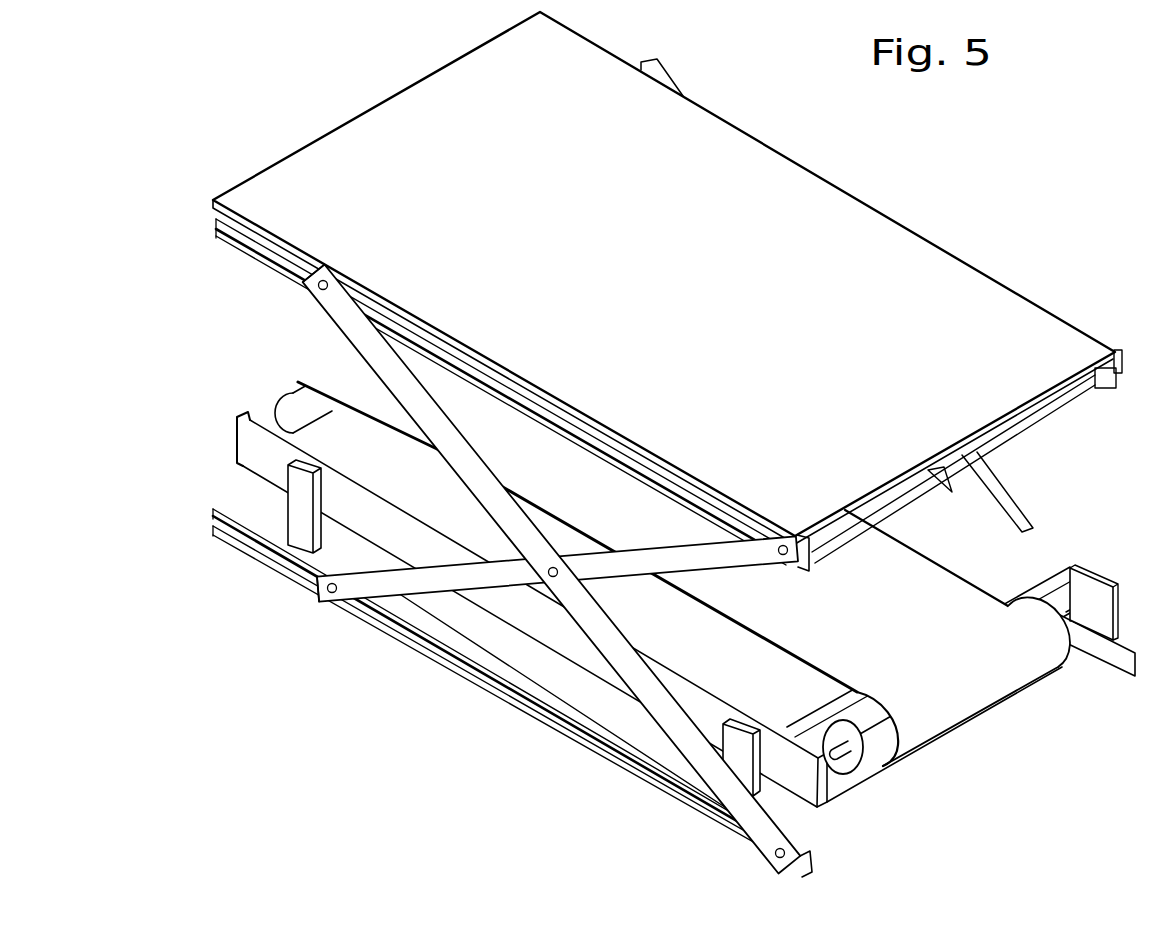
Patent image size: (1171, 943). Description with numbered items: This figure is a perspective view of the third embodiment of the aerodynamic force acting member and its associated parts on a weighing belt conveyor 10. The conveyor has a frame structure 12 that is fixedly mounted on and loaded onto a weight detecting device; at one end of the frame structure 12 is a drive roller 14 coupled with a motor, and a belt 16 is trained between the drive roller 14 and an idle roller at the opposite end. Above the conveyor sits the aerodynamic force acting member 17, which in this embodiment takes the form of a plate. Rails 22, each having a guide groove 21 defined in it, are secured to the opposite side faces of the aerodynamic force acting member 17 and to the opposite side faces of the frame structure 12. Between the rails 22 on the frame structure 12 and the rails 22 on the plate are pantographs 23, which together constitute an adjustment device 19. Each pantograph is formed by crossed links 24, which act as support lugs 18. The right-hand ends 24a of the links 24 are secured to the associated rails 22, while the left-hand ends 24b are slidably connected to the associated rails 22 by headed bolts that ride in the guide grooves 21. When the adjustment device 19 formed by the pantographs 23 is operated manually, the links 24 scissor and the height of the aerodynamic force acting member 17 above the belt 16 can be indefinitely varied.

The weighing belt conveyor 10 is at (982, 728).
The frame structure 12 is at (240, 469).
The drive roller 14 is at (1063, 655).
The belt 16 is at (942, 727).
The aerodynamic force acting member 17 is at (951, 270).
The support lugs 18 is at (703, 568).
The adjustment device 19 is at (553, 572).
The guide groove 21 is at (547, 403).
The rails 22 is at (596, 424).
The pantographs 23 is at (650, 618).
The links 24 is at (478, 462).
The right-hand ends 24a is at (795, 530).
The left-hand ends 24b is at (336, 270).